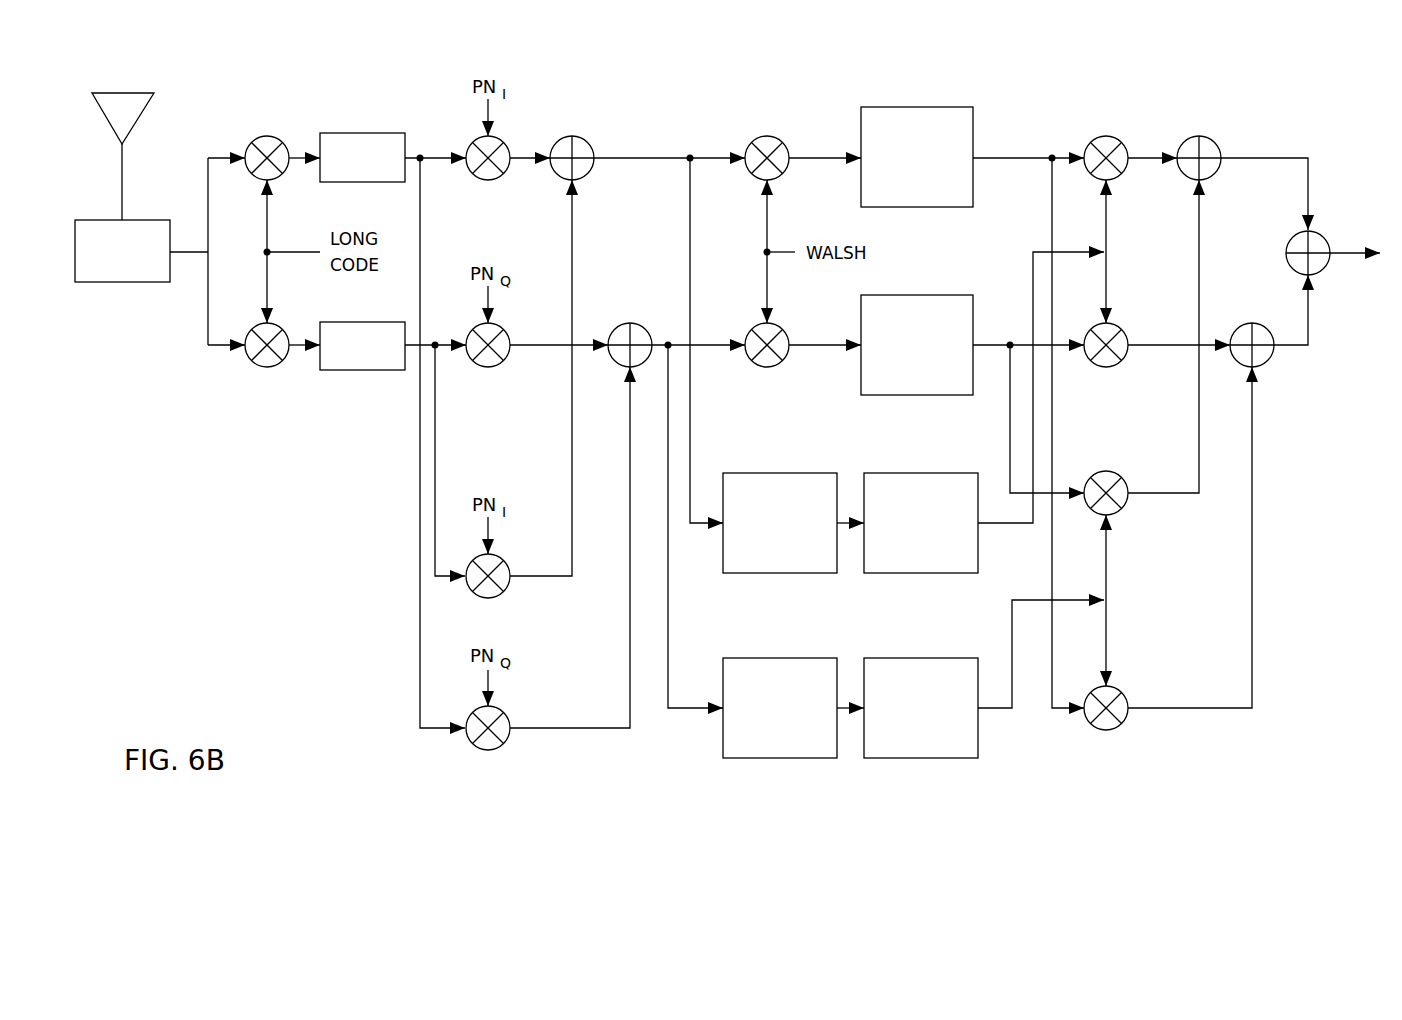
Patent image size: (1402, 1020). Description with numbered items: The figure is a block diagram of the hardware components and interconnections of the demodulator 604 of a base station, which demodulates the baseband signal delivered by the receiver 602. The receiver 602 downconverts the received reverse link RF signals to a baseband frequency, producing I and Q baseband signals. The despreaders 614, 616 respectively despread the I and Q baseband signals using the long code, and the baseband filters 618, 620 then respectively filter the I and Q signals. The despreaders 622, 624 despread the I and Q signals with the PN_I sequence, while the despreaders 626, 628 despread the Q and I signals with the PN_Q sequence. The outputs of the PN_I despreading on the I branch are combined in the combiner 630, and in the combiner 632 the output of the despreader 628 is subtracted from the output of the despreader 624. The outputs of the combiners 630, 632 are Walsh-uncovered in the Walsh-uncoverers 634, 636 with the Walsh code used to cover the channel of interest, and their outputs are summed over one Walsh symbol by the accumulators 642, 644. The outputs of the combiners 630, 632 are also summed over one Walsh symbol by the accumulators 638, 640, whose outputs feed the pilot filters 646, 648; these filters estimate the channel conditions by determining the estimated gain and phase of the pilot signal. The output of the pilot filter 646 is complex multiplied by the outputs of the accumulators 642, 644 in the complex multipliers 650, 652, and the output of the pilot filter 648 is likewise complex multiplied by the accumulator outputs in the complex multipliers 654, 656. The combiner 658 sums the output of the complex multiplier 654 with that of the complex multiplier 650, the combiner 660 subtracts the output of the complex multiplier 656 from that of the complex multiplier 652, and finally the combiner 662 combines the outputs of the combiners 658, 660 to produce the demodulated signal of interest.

The receiver 602 is at (105, 282).
The demodulator 604 is at (176, 342).
The despreader 614 is at (259, 138).
The despreader 616 is at (262, 368).
The baseband filter 618 is at (350, 133).
The baseband filter 620 is at (345, 370).
The despreader 622 is at (508, 140).
The despreader 624 is at (487, 367).
The despreader 626 is at (505, 593).
The despreader 628 is at (487, 750).
The combiner 630 is at (584, 176).
The combiner 632 is at (630, 323).
The Walsh-uncoverer 634 is at (762, 137).
The Walsh-uncoverer 636 is at (762, 368).
The accumulator 638 is at (780, 473).
The accumulator 640 is at (776, 658).
The accumulator 642 is at (920, 107).
The accumulator 644 is at (920, 295).
The pilot filter 646 is at (920, 473).
The pilot filter 648 is at (918, 658).
The complex multiplier 650 is at (1100, 137).
The complex multiplier 652 is at (1106, 367).
The complex multiplier 654 is at (1122, 512).
The complex multiplier 656 is at (1120, 688).
The combiner 658 is at (1199, 136).
The combiner 660 is at (1268, 360).
The combiner 662 is at (1295, 234).